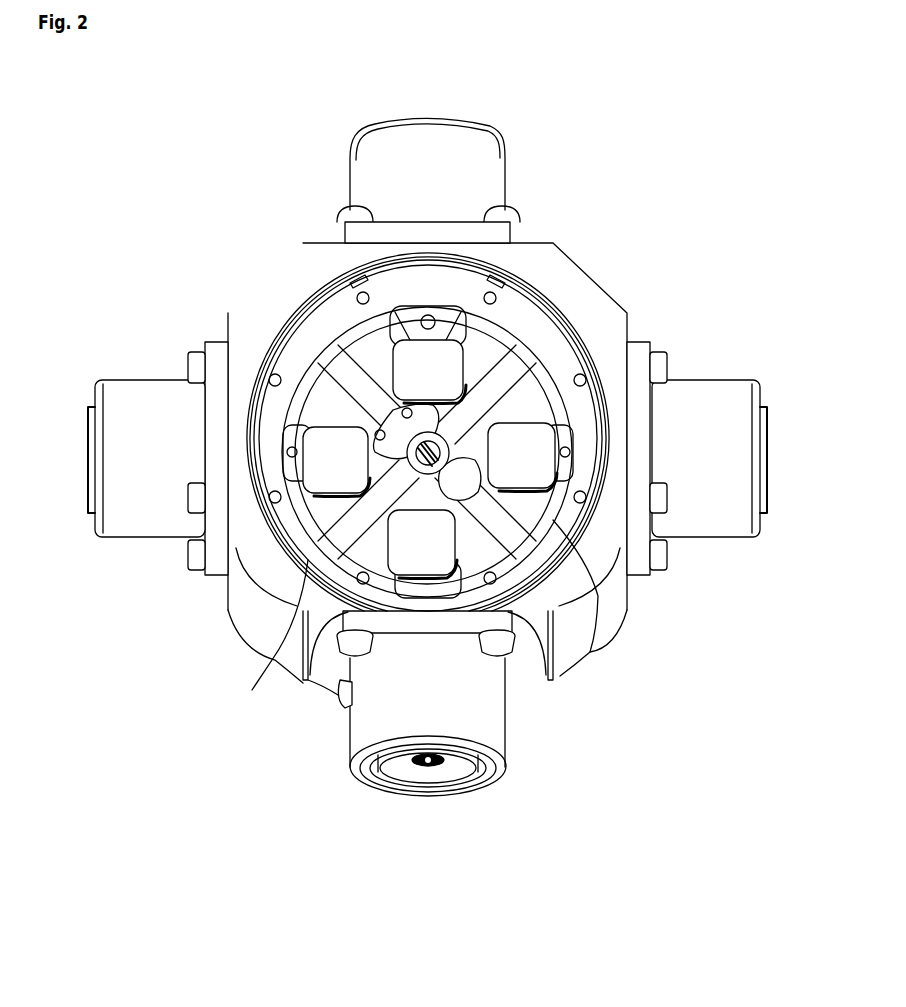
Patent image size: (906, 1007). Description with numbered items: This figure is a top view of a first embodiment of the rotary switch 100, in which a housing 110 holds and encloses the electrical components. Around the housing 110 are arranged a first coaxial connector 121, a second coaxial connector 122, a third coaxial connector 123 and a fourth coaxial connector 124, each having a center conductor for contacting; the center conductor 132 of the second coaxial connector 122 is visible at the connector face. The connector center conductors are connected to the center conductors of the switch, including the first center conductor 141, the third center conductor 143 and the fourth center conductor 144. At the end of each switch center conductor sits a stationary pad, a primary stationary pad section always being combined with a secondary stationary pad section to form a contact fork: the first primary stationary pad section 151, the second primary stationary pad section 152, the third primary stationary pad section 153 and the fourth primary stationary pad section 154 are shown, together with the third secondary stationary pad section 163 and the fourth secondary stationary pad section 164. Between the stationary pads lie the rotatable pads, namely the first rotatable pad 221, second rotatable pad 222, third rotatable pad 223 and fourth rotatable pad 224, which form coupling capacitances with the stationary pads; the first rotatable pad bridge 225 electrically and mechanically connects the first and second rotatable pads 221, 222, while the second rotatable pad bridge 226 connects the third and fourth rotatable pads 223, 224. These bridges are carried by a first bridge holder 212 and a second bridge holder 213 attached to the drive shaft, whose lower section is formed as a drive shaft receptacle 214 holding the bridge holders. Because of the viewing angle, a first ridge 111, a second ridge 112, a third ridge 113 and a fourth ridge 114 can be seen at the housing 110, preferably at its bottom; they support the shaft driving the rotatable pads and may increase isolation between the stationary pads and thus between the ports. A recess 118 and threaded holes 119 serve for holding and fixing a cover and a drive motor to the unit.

The rotary switch 100 is at (663, 180).
The housing 110 is at (598, 310).
The first ridge 111 is at (540, 630).
The second ridge 112 is at (275, 660).
The third ridge 113 is at (355, 375).
The fourth ridge 114 is at (593, 322).
The recess 118 is at (510, 312).
The threaded holes 119 is at (640, 340).
The first coaxial connector 121 is at (707, 392).
The second coaxial connector 122 is at (350, 715).
The third coaxial connector 123 is at (143, 392).
The fourth coaxial connector 124 is at (350, 160).
The center conductor 132 is at (428, 772).
The first center conductor 141 is at (570, 462).
The third center conductor 143 is at (297, 463).
The fourth center conductor 144 is at (440, 318).
The first primary stationary pad section 151 is at (502, 465).
The second primary stationary pad section 152 is at (395, 553).
The third primary stationary pad section 153 is at (314, 478).
The fourth primary stationary pad section 154 is at (407, 380).
The third secondary stationary pad section 163 is at (320, 510).
The fourth secondary stationary pad section 164 is at (466, 330).
The first bridge holder 212 is at (598, 598).
The second bridge holder 213 is at (355, 356).
The drive shaft receptacle 214 is at (567, 437).
The first rotatable pad 221 is at (560, 528).
The second rotatable pad 222 is at (477, 560).
The third rotatable pad 223 is at (300, 403).
The fourth rotatable pad 224 is at (372, 330).
The first rotatable pad bridge 225 is at (440, 555).
The second rotatable pad bridge 226 is at (293, 457).